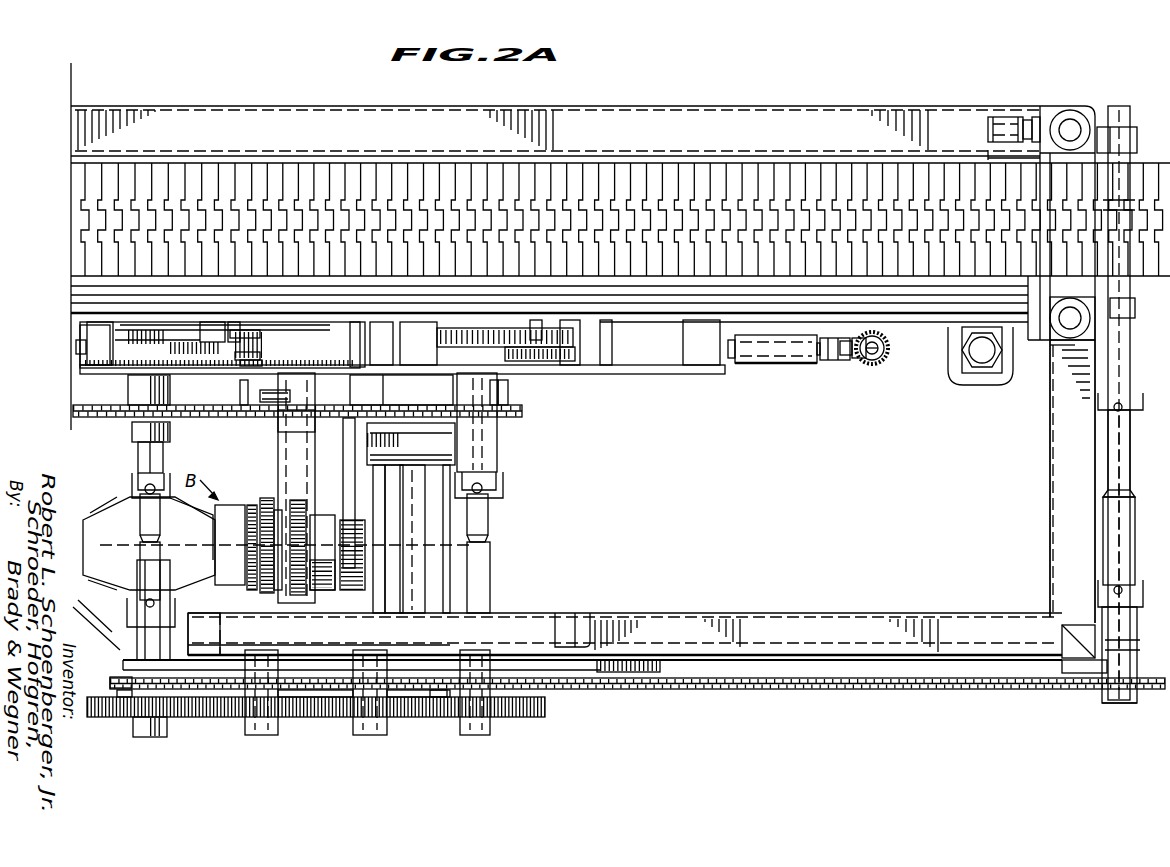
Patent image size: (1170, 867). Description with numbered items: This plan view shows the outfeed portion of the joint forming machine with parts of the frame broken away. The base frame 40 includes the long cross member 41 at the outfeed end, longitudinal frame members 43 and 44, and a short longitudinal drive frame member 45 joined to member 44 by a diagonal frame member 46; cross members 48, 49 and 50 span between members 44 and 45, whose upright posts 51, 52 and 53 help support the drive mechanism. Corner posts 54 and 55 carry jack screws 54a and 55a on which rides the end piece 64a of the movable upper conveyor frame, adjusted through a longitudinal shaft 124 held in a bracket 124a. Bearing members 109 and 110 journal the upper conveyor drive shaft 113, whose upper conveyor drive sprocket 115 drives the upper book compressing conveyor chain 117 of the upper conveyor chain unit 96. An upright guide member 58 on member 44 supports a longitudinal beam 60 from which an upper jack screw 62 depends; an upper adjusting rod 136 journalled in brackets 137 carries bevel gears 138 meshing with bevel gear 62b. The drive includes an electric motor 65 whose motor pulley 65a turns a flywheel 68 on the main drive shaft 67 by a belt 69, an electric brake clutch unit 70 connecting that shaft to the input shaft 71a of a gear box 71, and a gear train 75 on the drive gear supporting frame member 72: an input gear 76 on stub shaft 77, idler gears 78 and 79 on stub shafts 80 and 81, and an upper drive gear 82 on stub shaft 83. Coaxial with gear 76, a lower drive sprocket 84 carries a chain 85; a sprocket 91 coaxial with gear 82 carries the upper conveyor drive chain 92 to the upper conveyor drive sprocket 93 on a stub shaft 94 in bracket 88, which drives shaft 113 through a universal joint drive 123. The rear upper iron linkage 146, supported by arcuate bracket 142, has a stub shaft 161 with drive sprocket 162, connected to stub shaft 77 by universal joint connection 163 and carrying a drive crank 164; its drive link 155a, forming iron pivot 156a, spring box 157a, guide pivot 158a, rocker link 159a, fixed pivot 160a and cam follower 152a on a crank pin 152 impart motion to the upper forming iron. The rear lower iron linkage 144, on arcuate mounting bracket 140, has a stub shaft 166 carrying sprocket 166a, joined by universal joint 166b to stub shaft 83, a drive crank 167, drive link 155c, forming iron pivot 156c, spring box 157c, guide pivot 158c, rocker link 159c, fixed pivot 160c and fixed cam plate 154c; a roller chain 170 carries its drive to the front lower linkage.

The base frame 40 is at (639, 107).
The longitudinal frame member 43 is at (705, 122).
The upper book compressing conveyor chain unit 96 is at (159, 157).
The upper book compressing conveyor chain 117 is at (352, 172).
The corner post 54 is at (1085, 106).
The jack screw 54a is at (1066, 118).
The longitudinal shaft 124 is at (1000, 117).
The bracket 124a is at (1028, 120).
The end piece 64a is at (1040, 160).
The upper conveyor drive shaft 113 is at (1120, 106).
The bearing member 109 is at (1137, 135).
The upper conveyor drive sprocket 115 is at (1130, 207).
The bearing member 110 is at (1135, 308).
The corner post 55 is at (1070, 320).
The jack screw 55a is at (1063, 340).
The long cross member 41 is at (1062, 452).
The universal joint drive 123 is at (1130, 508).
The upright guide member 58 is at (982, 373).
The longitudinal frame member 44 is at (1000, 385).
The upper jack screw 62 is at (890, 345).
The bevel gear 62b is at (880, 365).
The longitudinal beam 60 is at (797, 370).
The upper adjusting rod 136 is at (768, 366).
The bracket 137 is at (835, 362).
The bevel gear 138 is at (860, 360).
The arcuate mounting bracket 140 is at (700, 375).
The stub shaft 161 is at (125, 383).
The cam follower 152a is at (85, 329).
The drive crank 164 is at (80, 348).
The guide pivot 158a is at (192, 325).
The spring box 157a is at (258, 335).
The rear upper forming iron actuating linkage 146 is at (258, 355).
The fixed cam plate 154c is at (357, 362).
The rocker link 159a is at (260, 353).
The drive crank 167 is at (410, 347).
The rear lower forming iron actuating linkage 144 is at (580, 345).
The forming iron pivot 156c is at (581, 335).
The spring box 157c is at (630, 350).
The rocker link 159c is at (603, 368).
The roller chain 170 is at (75, 408).
The drive sprocket 162 is at (145, 420).
The universal joint connection 163 is at (138, 468).
The gear box 71 is at (130, 478).
The diagonal frame member 46 is at (120, 590).
The lower drive sprocket 84 is at (100, 630).
The chain 85 is at (115, 678).
The input shaft 71a is at (243, 525).
The cross member 50 is at (270, 462).
The motor pulley 65a is at (316, 440).
The arcuate supporting bracket 142 is at (278, 398).
The fixed pivot 160a is at (243, 386).
The drive link 155a is at (223, 330).
The forming iron pivot 156a is at (237, 335).
The belt 69 is at (318, 479).
The electric brake clutch unit 70 is at (260, 582).
The flywheel 68 is at (313, 595).
The cross member 48 is at (408, 582).
The cross member 49 is at (362, 479).
The main drive shaft 67 is at (373, 537).
The crank pin 152 is at (433, 345).
The electric motor 65 is at (405, 437).
The stub shaft 166 is at (500, 398).
The sprocket 166a is at (503, 475).
The universal joint 166b is at (492, 552).
The guide pivot 158c is at (497, 398).
The fixed pivot 160c is at (537, 340).
The drive link 155c is at (507, 388).
The short longitudinal drive frame member 45 is at (730, 620).
The upright post 53 is at (220, 632).
The upright post 52 is at (600, 625).
The drive gear supporting frame member 72 is at (630, 660).
The upright post 51 is at (1060, 638).
The bracket 88 is at (1133, 667).
The stub shaft 94 is at (1127, 648).
The upper conveyor drive sprocket 93 is at (1152, 697).
The upper conveyor drive chain 92 is at (760, 692).
The upper drive gear 82 is at (562, 708).
The gear train 75 is at (215, 720).
The input gear 76 is at (122, 718).
The stub shaft 77 is at (145, 738).
The stub shaft 80 is at (260, 735).
The idler gear 78 is at (310, 718).
The stub shaft 81 is at (370, 735).
The idler gear 79 is at (415, 720).
The sprocket 91 is at (446, 718).
The stub shaft 83 is at (478, 736).